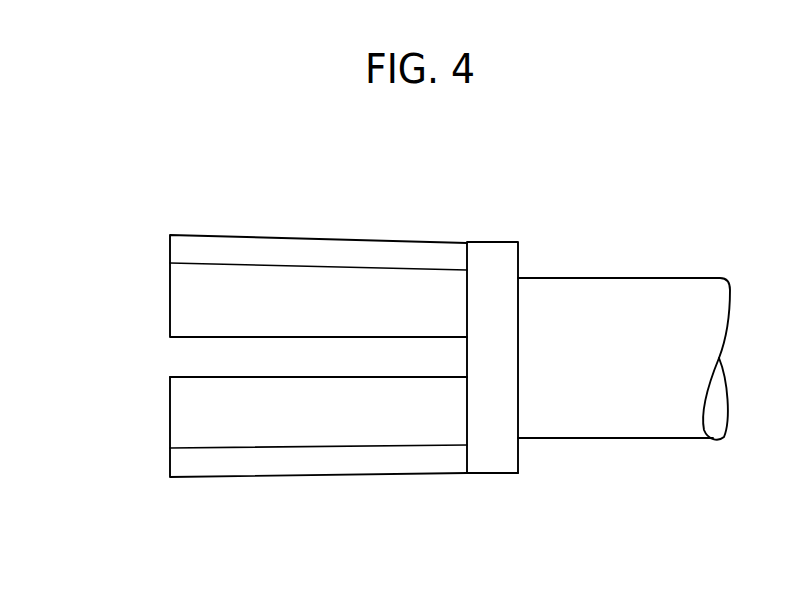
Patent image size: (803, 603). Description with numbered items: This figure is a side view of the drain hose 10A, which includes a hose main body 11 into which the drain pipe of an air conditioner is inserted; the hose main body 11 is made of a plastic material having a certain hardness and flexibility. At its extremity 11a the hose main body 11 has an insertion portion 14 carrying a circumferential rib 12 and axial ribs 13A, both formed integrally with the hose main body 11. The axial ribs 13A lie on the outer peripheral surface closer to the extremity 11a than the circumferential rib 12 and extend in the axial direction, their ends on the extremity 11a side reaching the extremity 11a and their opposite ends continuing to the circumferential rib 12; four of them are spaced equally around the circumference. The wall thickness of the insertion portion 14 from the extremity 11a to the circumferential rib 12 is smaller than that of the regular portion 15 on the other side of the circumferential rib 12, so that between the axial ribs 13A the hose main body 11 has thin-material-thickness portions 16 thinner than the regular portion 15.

The drain hose 10A is at (207, 218).
The hose main body 11 is at (672, 277).
The extremity 11a is at (168, 428).
The circumferential rib 12 is at (490, 250).
The axial ribs 13A is at (316, 248).
The insertion portion 14 is at (492, 475).
The regular portion 15 is at (603, 278).
The thin-material-thickness portions 16 is at (180, 300).